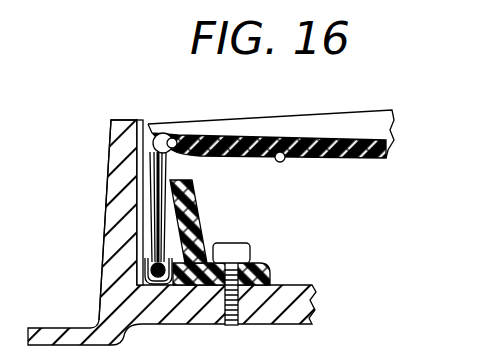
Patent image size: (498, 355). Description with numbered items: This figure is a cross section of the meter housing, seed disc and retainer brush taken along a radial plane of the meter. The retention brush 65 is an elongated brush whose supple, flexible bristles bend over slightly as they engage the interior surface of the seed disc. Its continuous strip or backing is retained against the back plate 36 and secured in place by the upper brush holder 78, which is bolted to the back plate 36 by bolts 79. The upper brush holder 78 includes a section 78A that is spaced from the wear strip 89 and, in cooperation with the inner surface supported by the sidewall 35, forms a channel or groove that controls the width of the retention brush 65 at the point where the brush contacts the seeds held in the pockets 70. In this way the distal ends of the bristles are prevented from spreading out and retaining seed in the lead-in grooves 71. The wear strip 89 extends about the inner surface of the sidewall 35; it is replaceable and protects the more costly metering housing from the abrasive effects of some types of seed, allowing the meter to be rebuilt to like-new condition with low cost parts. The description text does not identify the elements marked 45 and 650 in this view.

The sidewall 35 is at (107, 193).
The back plate 36 is at (300, 284).
The lever arm 45 is at (281, 133).
The retention brush 65 is at (178, 169).
The pockets 70 is at (189, 156).
The lead-in grooves 71 is at (258, 150).
The upper brush holder 78 is at (271, 266).
The section 78A is at (198, 230).
The bolts 79 is at (248, 240).
The wear strip 89 is at (143, 120).
The roller housing 650 is at (118, 281).